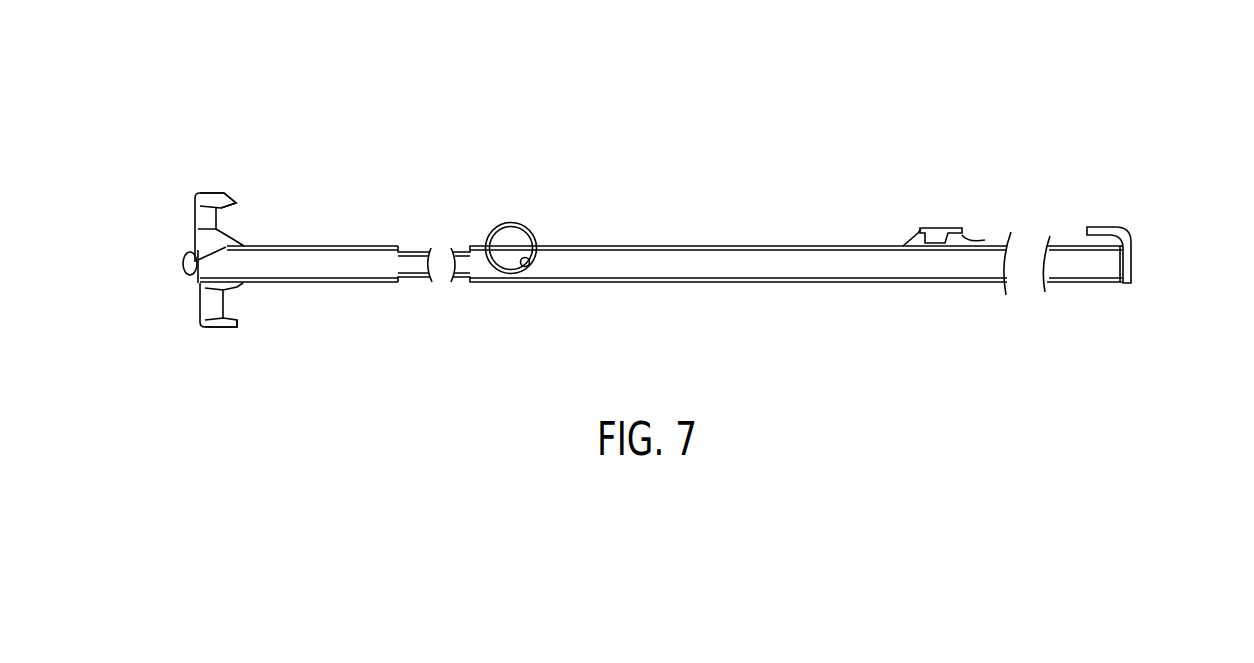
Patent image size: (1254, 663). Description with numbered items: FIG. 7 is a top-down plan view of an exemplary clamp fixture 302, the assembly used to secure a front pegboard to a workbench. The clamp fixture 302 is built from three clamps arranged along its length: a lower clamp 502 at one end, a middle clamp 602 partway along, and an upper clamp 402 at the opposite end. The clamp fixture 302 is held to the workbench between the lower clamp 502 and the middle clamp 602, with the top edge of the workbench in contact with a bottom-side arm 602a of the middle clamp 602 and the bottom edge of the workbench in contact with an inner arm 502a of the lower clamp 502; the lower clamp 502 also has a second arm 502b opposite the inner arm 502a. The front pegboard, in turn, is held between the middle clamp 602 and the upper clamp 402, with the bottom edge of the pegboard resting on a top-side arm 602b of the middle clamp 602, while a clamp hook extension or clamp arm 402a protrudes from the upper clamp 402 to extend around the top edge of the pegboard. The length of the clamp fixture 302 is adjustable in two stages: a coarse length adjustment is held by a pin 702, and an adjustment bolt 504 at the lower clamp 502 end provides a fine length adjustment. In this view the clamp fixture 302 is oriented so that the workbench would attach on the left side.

The clamp fixture 302 is at (1003, 77).
The upper clamp 402 is at (1135, 258).
The clamp arm 402a is at (1125, 230).
The lower clamp 502 is at (171, 233).
The inner arm 502a is at (238, 199).
The lower clip arm 502b is at (237, 322).
The adjustment bolt 504 is at (181, 263).
The middle clamp 602 is at (940, 188).
The bottom-side arm 602a is at (905, 243).
The top-side arm 602b is at (976, 239).
The pin 702 is at (528, 266).